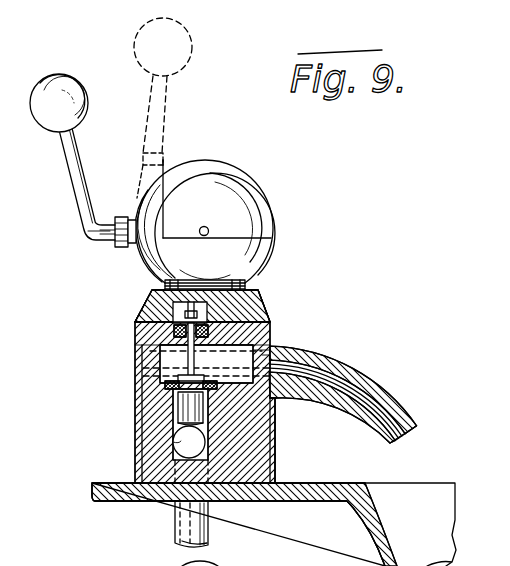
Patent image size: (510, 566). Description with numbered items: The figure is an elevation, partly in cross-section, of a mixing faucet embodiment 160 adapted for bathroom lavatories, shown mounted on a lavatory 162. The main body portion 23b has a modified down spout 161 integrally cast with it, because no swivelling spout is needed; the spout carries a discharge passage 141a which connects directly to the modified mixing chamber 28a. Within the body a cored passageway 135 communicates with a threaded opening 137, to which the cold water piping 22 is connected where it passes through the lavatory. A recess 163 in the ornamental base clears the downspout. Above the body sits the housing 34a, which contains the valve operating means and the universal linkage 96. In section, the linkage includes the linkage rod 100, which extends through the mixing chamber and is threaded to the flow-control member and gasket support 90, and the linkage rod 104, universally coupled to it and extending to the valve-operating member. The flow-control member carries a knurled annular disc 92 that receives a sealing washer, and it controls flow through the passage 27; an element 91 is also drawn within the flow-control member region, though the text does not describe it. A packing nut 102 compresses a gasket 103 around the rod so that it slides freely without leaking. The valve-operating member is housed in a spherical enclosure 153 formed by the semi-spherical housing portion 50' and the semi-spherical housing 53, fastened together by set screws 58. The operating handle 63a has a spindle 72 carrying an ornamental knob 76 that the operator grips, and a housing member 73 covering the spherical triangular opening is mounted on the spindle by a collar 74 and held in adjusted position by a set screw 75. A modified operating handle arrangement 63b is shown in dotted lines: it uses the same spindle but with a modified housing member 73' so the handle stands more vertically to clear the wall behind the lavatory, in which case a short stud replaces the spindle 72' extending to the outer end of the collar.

The ornamental knob 76 is at (76, 108).
The spindle 72' is at (95, 178).
The spindle 72 is at (177, 114).
The operating handle 63a is at (73, 185).
The modified operating handle arrangement 63b is at (168, 105).
The modified housing member 73' is at (177, 158).
The housing member 73 is at (131, 241).
The collar 74 is at (116, 215).
The set screw 75 is at (118, 250).
The semi-spherical housing 53 is at (187, 216).
The set screws 58 is at (205, 227).
The semi-spherical housing portion 50' is at (217, 255).
The spherical enclosure 153 is at (240, 186).
The mixing faucet embodiment 160 is at (273, 204).
The gasket 103 is at (258, 307).
The housing 34a is at (207, 337).
The packing nut 102 is at (268, 327).
The linkage rod 104 is at (178, 305).
The linkage rod 100 is at (137, 353).
The universal linkage 96 is at (180, 360).
The knurled annular disc 92 is at (167, 384).
The flow-control member and gasket support 90 is at (140, 416).
The piston 91 is at (192, 414).
The passage 27 is at (137, 437).
The cored passageway 135 is at (177, 447).
The modified mixing chamber 28a is at (230, 362).
The down spout 161 is at (352, 357).
The discharge passage 141a is at (345, 385).
The recess 163 is at (273, 400).
The main body portion 23b is at (258, 440).
The threaded opening 137 is at (208, 468).
The cold water piping 22 is at (210, 525).
The lavatory 162 is at (418, 530).